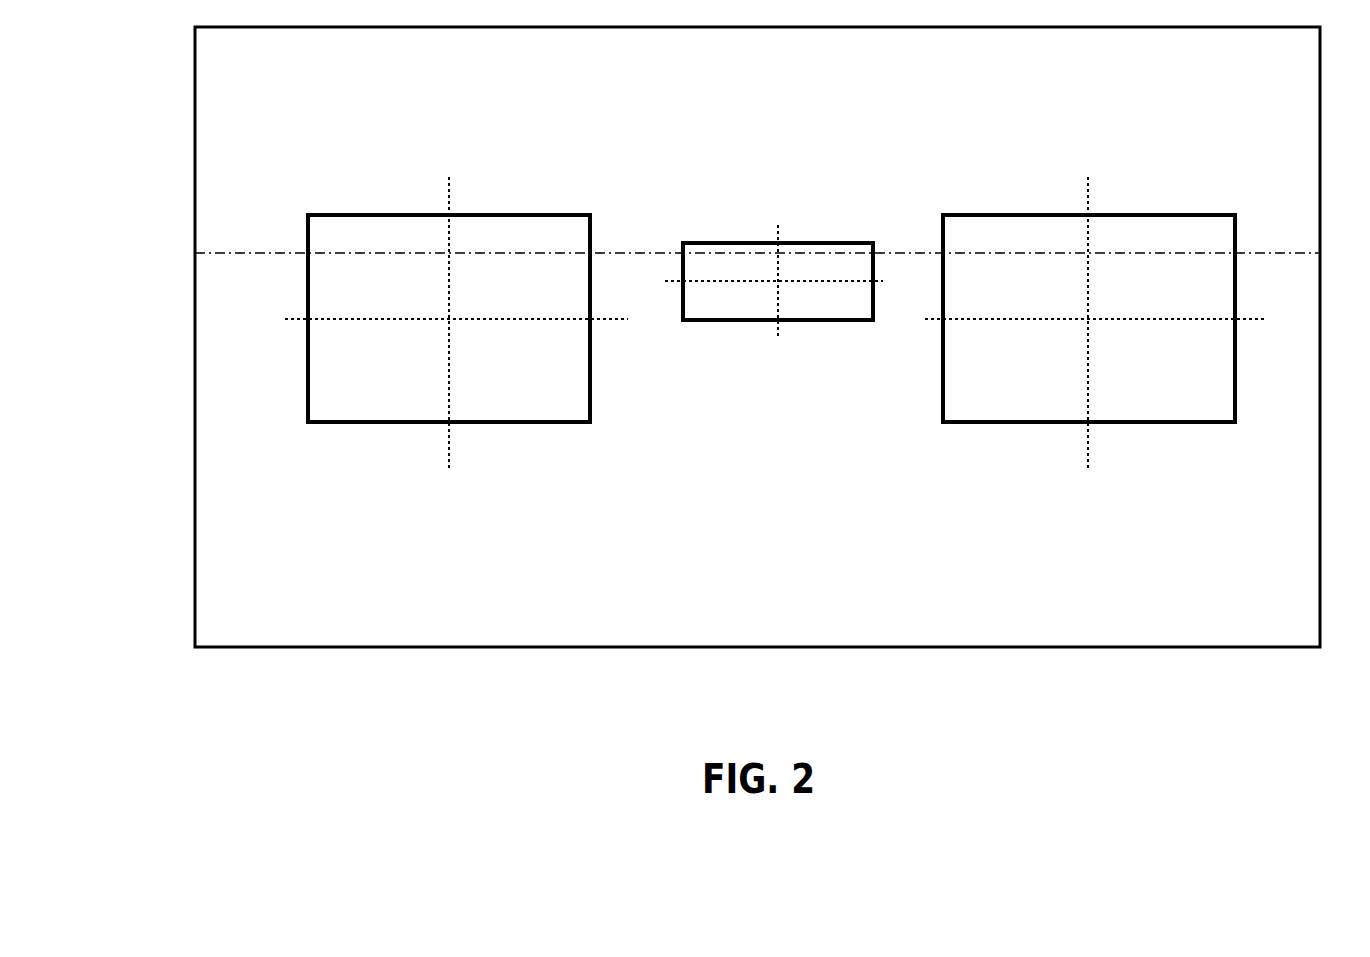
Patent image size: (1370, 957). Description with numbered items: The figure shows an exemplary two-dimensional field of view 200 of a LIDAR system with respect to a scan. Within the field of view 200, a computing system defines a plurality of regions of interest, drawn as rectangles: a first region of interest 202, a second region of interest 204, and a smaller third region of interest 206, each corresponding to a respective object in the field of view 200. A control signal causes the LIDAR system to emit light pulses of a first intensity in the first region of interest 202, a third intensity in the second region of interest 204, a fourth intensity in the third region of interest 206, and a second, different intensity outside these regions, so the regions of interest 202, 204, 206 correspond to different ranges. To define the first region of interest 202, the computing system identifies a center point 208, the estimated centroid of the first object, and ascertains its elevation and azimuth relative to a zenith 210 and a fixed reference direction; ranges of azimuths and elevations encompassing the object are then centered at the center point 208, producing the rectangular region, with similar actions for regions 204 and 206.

The field of view 200 is at (195, 63).
The first region of interest 202 is at (308, 213).
The second region of interest 204 is at (960, 213).
The third region of interest 206 is at (708, 243).
The center point 208 is at (447, 318).
The zenith 210 is at (216, 255).